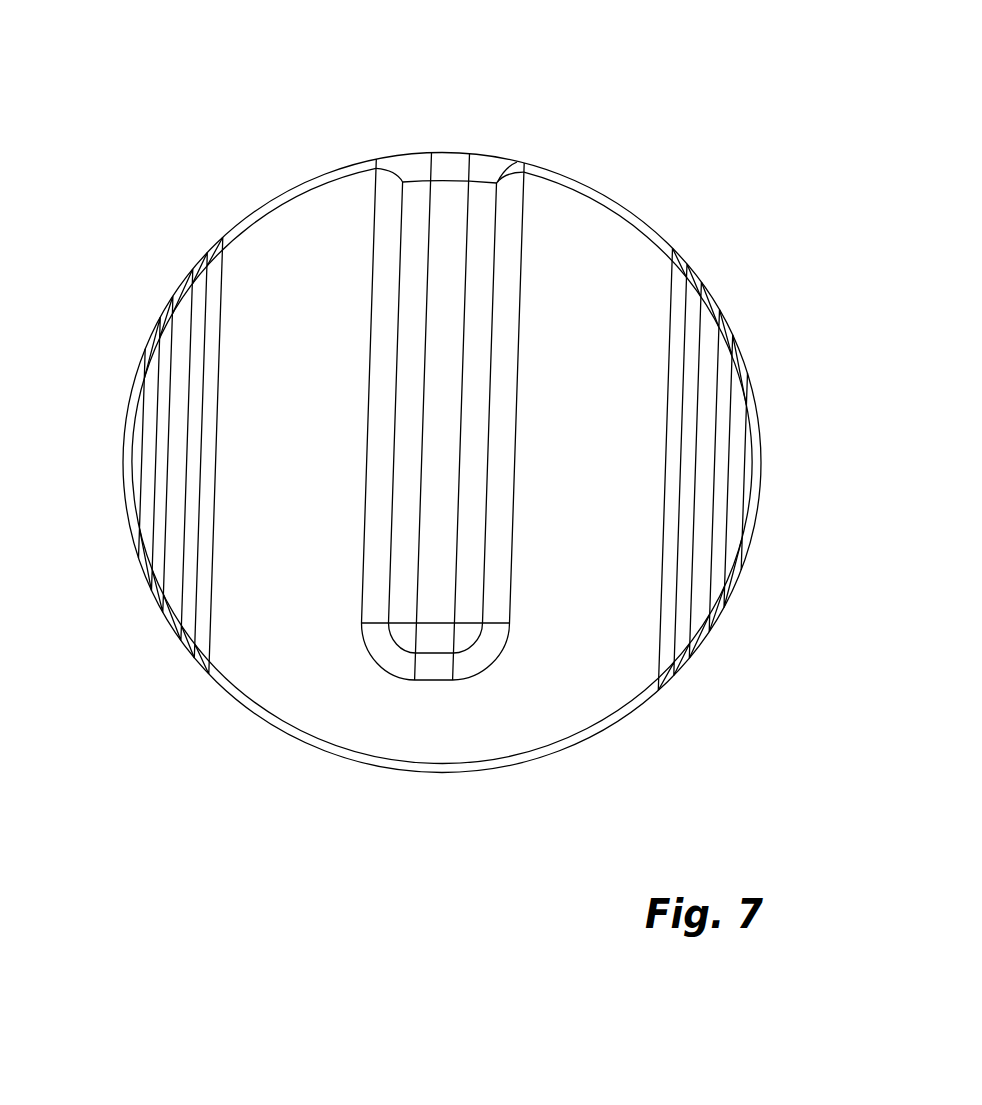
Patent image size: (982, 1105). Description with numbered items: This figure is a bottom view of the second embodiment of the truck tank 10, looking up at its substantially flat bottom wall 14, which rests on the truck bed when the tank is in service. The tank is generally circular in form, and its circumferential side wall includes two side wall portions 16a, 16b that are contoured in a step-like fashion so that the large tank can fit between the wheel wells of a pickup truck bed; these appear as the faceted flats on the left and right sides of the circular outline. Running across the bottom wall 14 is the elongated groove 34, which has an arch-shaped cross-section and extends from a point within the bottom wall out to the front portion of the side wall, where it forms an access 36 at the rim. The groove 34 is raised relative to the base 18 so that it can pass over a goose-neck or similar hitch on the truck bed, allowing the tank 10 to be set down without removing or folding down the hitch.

The truck tank 10 is at (437, 421).
The bottom wall 14 is at (648, 226).
The side wall portion 16a is at (762, 479).
The side wall portion 16b is at (123, 458).
The base 18 is at (577, 464).
The groove 34 is at (464, 449).
The access 36 is at (498, 164).